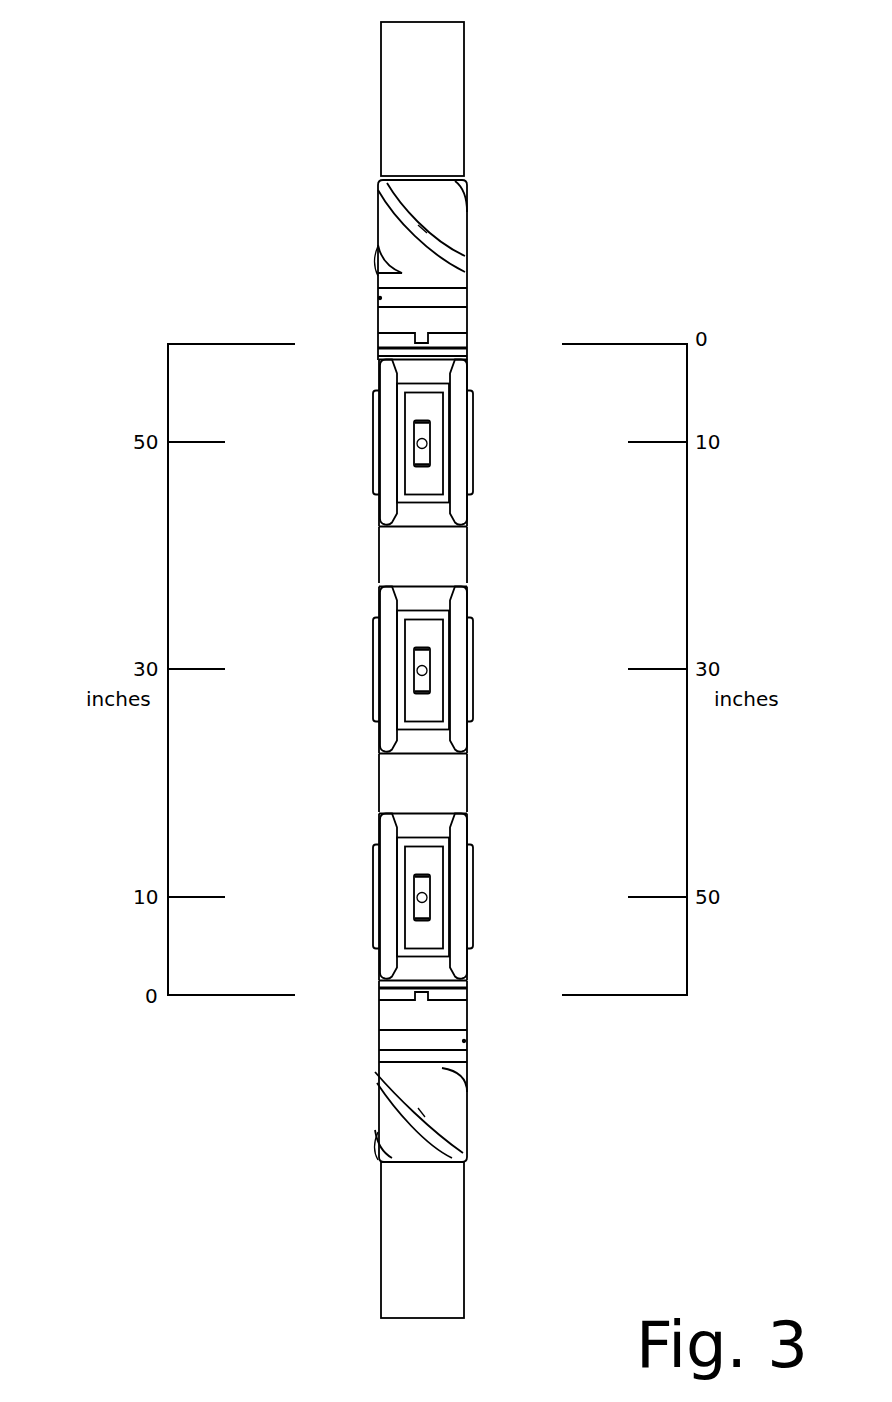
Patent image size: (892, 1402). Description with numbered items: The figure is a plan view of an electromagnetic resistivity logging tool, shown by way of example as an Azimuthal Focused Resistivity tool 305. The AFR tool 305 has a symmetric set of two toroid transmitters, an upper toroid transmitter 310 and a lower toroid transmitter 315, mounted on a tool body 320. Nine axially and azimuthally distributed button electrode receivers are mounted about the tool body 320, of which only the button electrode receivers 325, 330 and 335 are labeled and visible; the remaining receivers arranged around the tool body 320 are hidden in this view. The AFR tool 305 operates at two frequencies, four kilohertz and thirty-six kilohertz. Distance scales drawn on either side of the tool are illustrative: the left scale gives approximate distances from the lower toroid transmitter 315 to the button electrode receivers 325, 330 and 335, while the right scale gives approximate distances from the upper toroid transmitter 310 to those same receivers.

The Azimuthal Focused Resistivity (AFR) tool 305 is at (613, 54).
The upper toroid transmitter 310 is at (467, 345).
The lower toroid transmitter 315 is at (467, 995).
The tool body 320 is at (465, 80).
The button electrode receiver 325 is at (427, 444).
The button electrode receiver 330 is at (427, 671).
The button electrode receiver 335 is at (427, 898).